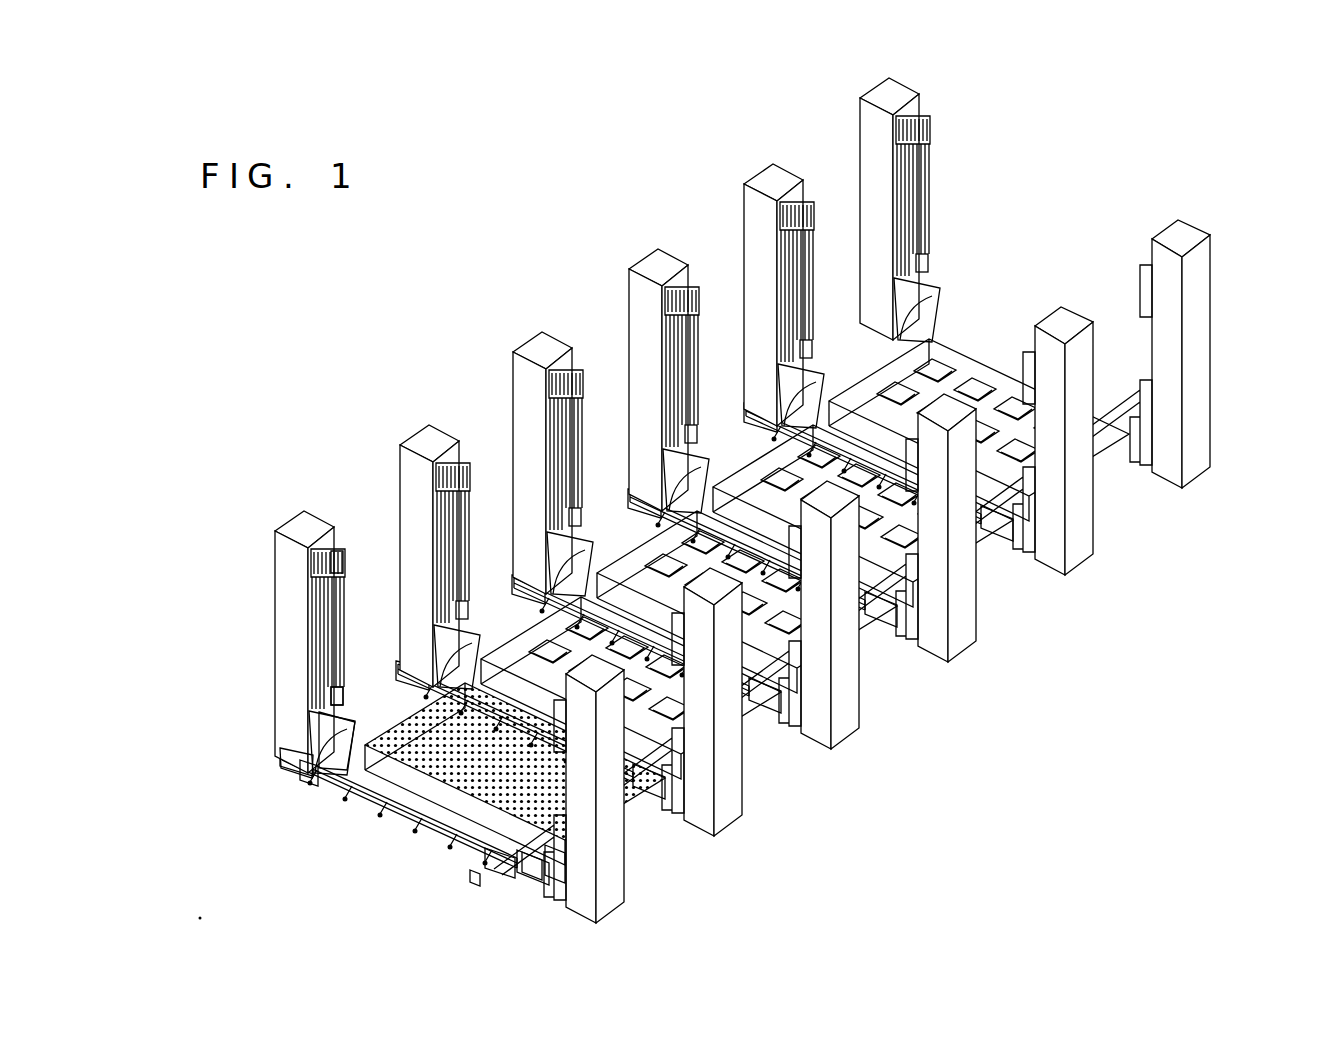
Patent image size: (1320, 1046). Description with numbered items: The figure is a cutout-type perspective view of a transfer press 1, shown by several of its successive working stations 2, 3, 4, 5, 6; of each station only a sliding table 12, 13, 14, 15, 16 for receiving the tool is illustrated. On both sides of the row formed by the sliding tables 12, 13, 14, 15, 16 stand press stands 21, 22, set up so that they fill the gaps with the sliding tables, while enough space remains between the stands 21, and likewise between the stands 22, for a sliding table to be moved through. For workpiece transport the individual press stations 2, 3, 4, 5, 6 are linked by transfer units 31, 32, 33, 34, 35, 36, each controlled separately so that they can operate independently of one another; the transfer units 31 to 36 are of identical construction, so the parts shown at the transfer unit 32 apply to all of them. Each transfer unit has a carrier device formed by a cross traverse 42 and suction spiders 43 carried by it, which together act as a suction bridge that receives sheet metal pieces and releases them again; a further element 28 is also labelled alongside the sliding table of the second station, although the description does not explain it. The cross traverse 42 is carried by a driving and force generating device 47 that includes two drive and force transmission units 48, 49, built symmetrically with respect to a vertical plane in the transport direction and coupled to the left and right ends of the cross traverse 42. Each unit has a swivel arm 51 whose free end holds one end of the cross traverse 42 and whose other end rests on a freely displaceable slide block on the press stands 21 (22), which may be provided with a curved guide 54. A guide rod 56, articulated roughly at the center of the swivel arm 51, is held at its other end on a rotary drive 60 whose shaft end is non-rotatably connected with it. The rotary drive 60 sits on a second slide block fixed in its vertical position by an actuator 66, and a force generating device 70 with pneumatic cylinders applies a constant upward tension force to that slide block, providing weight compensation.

The transfer press 1 is at (568, 203).
The working station 2 is at (384, 624).
The working station 3 is at (493, 577).
The working station 4 is at (610, 487).
The working station 5 is at (727, 402).
The working station 6 is at (840, 318).
The sliding table 12 is at (472, 787).
The sliding table 13 is at (588, 698).
The sliding table 14 is at (633, 558).
The sliding table 15 is at (747, 473).
The sliding table 16 is at (862, 388).
The press stand 21 is at (290, 530).
The press stand 22 is at (617, 887).
The guide rail 28 is at (558, 690).
The transfer unit 31 is at (302, 818).
The transfer unit 32 is at (418, 607).
The transfer unit 33 is at (532, 520).
The transfer unit 34 is at (648, 430).
The transfer unit 35 is at (763, 343).
The transfer unit 36 is at (878, 263).
The cross traverse 42 is at (382, 813).
The suction spider 43 is at (553, 853).
The driving and force generating device 47 is at (250, 740).
The drive and force transmission unit 48 is at (273, 777).
The drive and force transmission unit 49 is at (477, 877).
The swivel arm 51 is at (308, 768).
The curved guide 54 is at (347, 747).
The guide rod 56 is at (317, 705).
The rotary drive 60 is at (348, 673).
The actuator 66 is at (325, 553).
The force generating device 70 is at (350, 548).